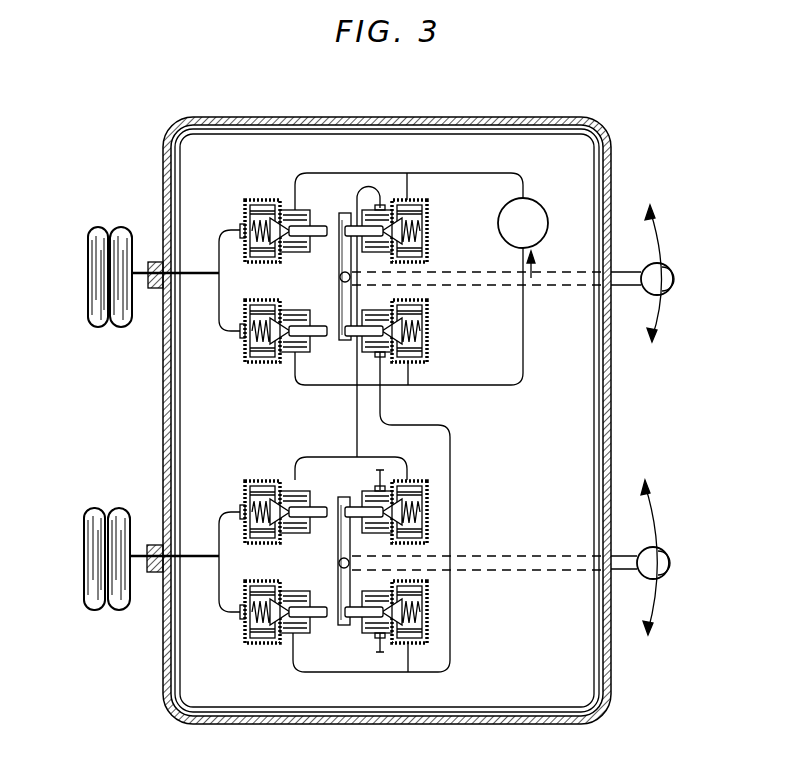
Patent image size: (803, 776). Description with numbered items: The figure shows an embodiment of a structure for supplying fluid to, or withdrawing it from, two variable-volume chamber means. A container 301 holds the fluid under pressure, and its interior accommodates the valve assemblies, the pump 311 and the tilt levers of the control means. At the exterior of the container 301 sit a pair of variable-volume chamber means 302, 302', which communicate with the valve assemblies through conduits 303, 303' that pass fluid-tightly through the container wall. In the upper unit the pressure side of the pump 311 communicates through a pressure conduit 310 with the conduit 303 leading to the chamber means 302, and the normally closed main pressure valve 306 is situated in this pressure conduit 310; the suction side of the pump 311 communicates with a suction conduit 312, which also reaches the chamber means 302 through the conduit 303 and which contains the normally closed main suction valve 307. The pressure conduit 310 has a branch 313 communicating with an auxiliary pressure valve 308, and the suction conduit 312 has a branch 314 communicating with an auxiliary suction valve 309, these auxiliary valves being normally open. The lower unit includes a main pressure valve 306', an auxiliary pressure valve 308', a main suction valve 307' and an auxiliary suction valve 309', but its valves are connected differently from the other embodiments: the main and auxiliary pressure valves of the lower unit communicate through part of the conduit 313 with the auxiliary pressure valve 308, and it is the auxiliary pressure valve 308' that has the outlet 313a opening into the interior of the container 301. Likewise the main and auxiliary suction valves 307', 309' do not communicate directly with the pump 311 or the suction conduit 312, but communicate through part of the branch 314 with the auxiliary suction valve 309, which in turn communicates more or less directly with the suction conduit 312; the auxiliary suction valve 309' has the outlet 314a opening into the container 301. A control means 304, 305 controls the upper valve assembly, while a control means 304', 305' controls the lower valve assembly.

The container 301 is at (611, 166).
The variable-volume chamber means 302 is at (90, 270).
The variable-volume chamber means 302' is at (87, 545).
The conduit 303 is at (165, 310).
The conduit 303' is at (164, 594).
The control means tilt lever 304 is at (642, 273).
The control means tilt lever 304' is at (640, 557).
The control means plate 305 is at (320, 276).
The control means plate 305' is at (320, 561).
The main pressure valve 306 is at (271, 217).
The main pressure valve 306' is at (262, 499).
The main suction valve 307 is at (269, 347).
The main suction valve 307' is at (269, 628).
The auxiliary pressure valve 308 is at (413, 231).
The auxiliary pressure valve 308' is at (423, 501).
The auxiliary suction valve 309 is at (413, 331).
The auxiliary suction valve 309' is at (424, 612).
The pressure conduit 310 is at (369, 167).
The pump 311 is at (541, 212).
The suction conduit 312 is at (496, 389).
The branch of pressure conduit 313 is at (409, 190).
The outlet 313a is at (377, 477).
The branch of suction conduit 314 is at (412, 372).
The outlet 314a is at (377, 650).